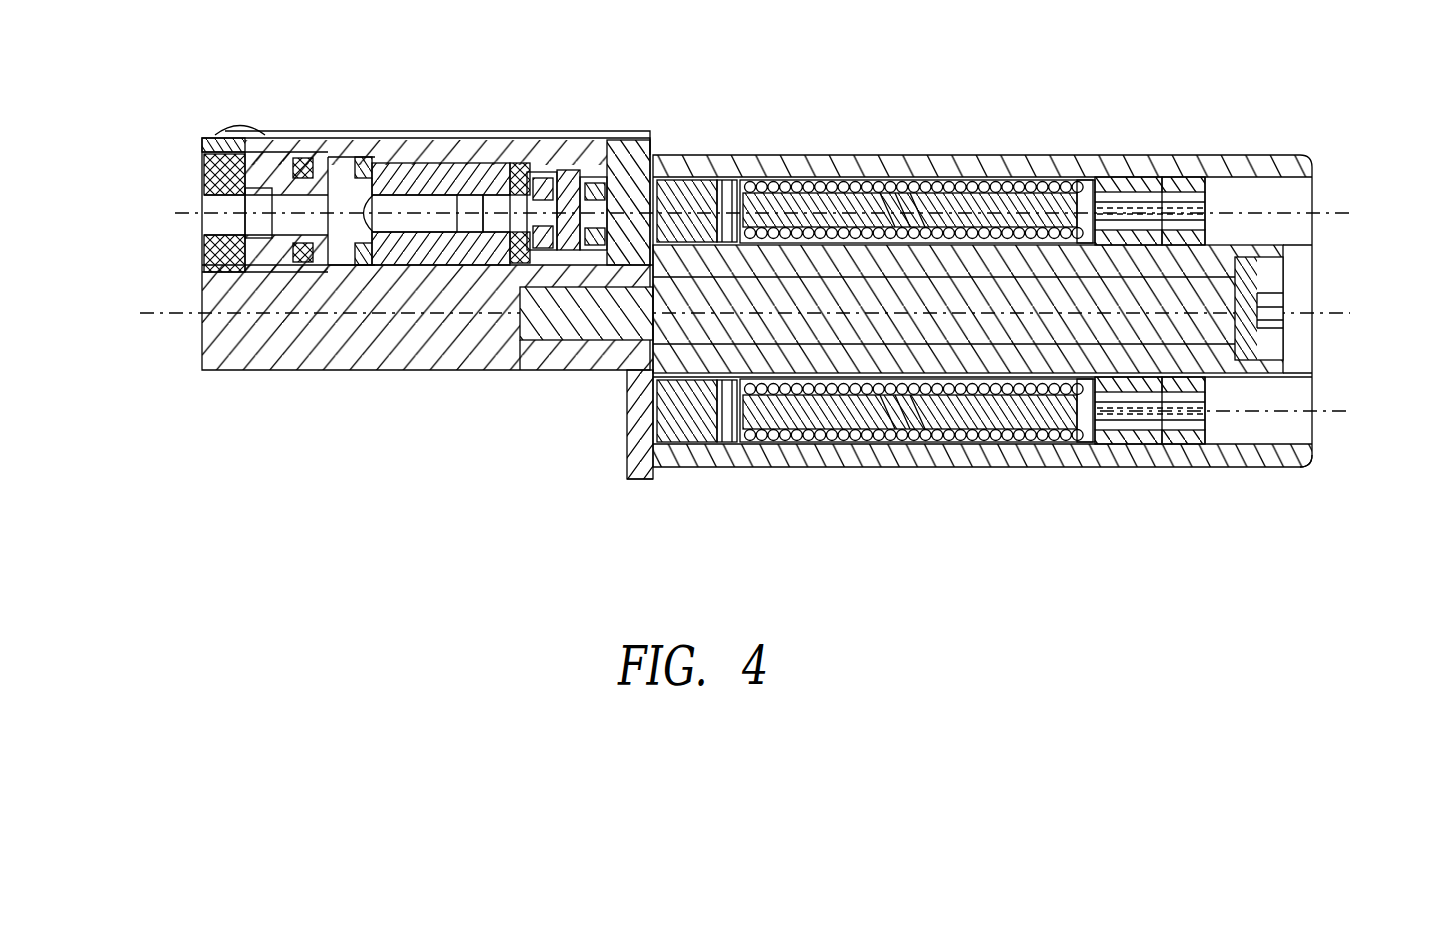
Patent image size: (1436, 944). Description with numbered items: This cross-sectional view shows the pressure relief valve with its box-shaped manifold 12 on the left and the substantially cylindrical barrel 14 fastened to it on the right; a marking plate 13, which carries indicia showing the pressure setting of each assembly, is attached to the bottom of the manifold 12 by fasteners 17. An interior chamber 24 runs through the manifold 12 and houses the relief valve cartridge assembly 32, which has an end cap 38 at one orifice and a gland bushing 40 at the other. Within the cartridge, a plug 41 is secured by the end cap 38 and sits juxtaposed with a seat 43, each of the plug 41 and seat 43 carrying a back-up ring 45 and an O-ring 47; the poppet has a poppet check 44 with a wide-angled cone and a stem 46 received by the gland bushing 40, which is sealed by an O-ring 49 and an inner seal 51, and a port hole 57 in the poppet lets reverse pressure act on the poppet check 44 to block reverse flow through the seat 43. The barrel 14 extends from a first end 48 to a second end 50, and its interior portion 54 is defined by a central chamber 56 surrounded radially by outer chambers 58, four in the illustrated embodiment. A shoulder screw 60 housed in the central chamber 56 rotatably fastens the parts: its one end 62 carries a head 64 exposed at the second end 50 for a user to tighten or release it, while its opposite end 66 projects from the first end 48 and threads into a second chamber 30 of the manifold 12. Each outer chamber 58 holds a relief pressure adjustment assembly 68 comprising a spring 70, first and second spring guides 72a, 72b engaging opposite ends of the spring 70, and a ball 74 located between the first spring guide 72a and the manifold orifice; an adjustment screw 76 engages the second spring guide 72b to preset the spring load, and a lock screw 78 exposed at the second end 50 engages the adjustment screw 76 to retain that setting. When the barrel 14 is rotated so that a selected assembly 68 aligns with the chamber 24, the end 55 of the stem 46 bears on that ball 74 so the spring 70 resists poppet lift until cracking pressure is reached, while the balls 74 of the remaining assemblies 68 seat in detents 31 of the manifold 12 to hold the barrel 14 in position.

The manifold 12 is at (202, 282).
The marking plate 13 is at (517, 134).
The barrel 14 is at (1193, 156).
The fasteners 17 is at (258, 130).
The interior chamber 24 is at (461, 268).
The second chamber 30 is at (595, 346).
The detents 31 is at (630, 448).
The relief valve cartridge assembly 32 is at (383, 256).
The end cap 38 is at (205, 153).
The gland bushing 40 is at (638, 148).
The plug 41 is at (330, 134).
The seat 43 is at (462, 172).
The poppet check 44 is at (530, 168).
The back-up ring 45 is at (300, 165).
The stem 46 is at (591, 178).
The O-ring 47 is at (300, 162).
The first end 48 is at (665, 468).
The O-ring 49 is at (655, 172).
The second end 50 is at (1312, 469).
The inner seal 51 is at (616, 142).
The interior portion 54 is at (958, 445).
The end 55 is at (752, 388).
The central chamber 56 is at (1308, 348).
The port hole 57 is at (562, 330).
The outer chambers 58 is at (1278, 185).
The shoulder screw 60 is at (1268, 245).
The one end 62 is at (1287, 322).
The head 64 is at (1284, 277).
The opposite end 66 is at (521, 332).
The relief pressure adjustment assembly 68 is at (905, 187).
The spring 70 is at (796, 196).
The first spring guide 72a is at (732, 180).
The second spring guide 72b is at (1097, 182).
The ball 74 is at (695, 182).
The adjustment screw 76 is at (1118, 178).
The lock screw 78 is at (1165, 178).